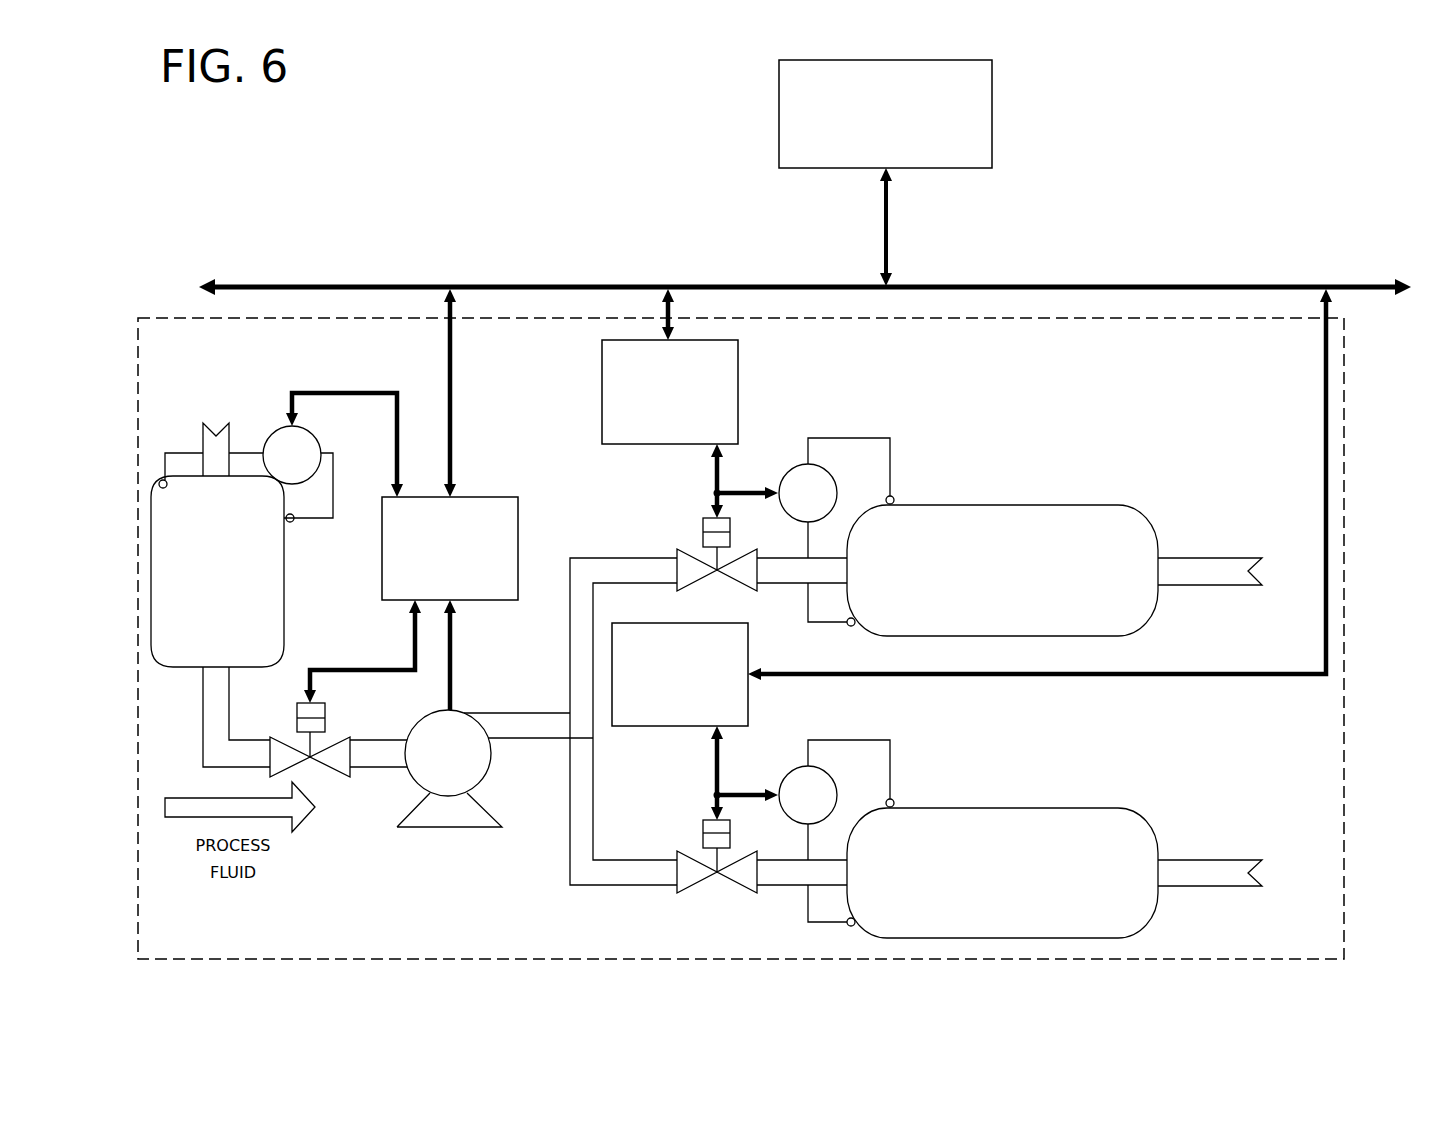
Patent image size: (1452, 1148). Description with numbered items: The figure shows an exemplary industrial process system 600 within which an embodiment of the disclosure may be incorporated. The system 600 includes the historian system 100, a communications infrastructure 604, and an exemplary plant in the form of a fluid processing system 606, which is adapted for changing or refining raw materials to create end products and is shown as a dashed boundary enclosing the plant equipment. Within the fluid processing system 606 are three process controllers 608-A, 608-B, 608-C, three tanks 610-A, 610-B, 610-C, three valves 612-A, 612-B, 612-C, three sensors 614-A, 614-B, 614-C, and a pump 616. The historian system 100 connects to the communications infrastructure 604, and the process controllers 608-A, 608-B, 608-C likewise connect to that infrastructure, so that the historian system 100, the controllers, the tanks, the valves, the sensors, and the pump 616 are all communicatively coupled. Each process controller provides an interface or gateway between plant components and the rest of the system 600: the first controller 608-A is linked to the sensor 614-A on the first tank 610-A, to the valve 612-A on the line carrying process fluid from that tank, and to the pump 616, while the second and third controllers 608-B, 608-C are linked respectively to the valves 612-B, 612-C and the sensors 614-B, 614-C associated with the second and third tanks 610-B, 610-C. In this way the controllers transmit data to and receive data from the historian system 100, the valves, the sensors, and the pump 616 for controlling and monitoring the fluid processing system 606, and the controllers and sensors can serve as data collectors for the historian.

The system 600 is at (530, 84).
The historian system 100 is at (871, 138).
The communications infrastructure 604 is at (283, 287).
The fluid processing system 606 is at (1346, 400).
The process controller 608-A is at (518, 497).
The process controller 608-B is at (738, 383).
The process controller 608-C is at (660, 726).
The tank 610-A is at (284, 597).
The tank 610-B is at (1022, 506).
The tank 610-C is at (1022, 808).
The valve 612-A is at (326, 720).
The valve 612-B is at (703, 533).
The valve 612-C is at (703, 838).
The sensor 614-A is at (266, 430).
The sensor 614-B is at (790, 473).
The sensor 614-C is at (790, 772).
The pump 616 is at (445, 832).